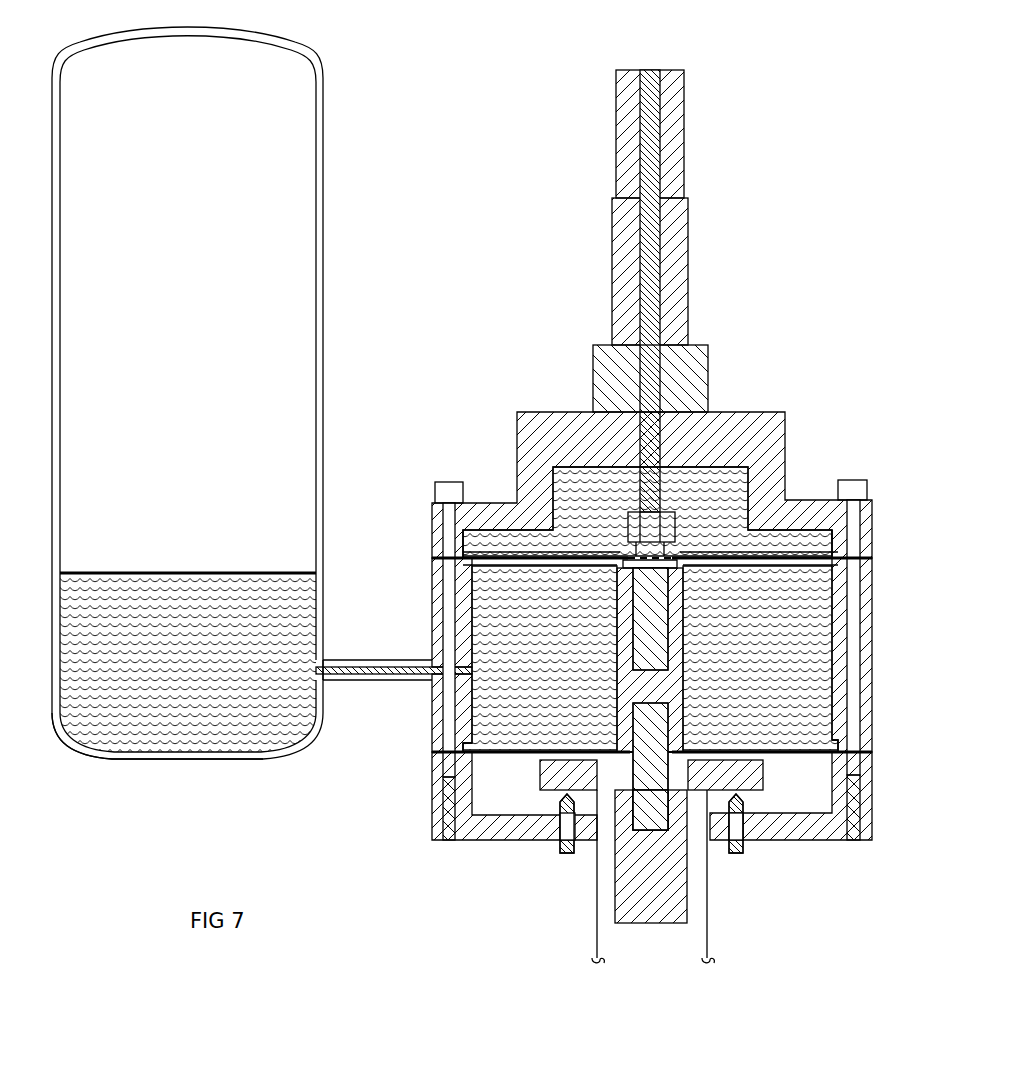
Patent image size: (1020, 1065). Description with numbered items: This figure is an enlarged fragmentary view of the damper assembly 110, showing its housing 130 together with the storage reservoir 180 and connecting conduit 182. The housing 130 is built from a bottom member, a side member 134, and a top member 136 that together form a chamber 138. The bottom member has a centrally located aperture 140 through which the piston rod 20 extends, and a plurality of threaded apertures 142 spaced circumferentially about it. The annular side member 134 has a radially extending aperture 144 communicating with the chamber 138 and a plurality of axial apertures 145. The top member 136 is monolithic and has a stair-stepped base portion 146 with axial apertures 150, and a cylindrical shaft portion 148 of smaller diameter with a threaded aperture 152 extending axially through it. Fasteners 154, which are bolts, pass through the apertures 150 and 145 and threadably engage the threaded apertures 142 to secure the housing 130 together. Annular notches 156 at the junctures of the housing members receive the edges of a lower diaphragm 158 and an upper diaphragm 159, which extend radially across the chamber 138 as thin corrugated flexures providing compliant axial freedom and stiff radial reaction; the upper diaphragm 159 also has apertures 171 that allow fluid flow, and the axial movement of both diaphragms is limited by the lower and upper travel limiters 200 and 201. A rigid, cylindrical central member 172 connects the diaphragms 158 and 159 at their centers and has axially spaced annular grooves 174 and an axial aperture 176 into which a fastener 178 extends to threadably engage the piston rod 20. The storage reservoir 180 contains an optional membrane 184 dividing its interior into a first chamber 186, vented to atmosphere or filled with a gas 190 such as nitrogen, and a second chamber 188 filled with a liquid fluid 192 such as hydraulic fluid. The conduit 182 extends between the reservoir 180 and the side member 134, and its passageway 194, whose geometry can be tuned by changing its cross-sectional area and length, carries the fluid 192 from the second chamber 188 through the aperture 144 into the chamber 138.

The piston rod 20 is at (602, 939).
The damper assembly 110 is at (761, 142).
The housing 130 is at (771, 403).
The side member 134 is at (872, 746).
The top member 136 is at (542, 430).
The chamber 138 is at (490, 580).
The aperture 140 is at (599, 830).
The threaded apertures 142 is at (447, 793).
The aperture 144 is at (414, 681).
The apertures 145 is at (446, 636).
The base portion 146 is at (553, 466).
The shaft portion 148 is at (624, 240).
The apertures 150 is at (446, 521).
The threaded aperture 152 is at (644, 115).
The fasteners 154 is at (446, 493).
The notches 156 is at (487, 549).
The lower diaphragm 158 is at (790, 763).
The upper diaphragm 159 is at (527, 562).
The apertures 171 is at (516, 549).
The central member 172 is at (632, 693).
The annular grooves 174 is at (626, 556).
The aperture 176 is at (640, 651).
The fastener 178 is at (600, 530).
The storage reservoir 180 is at (323, 186).
The conduit 182 is at (343, 683).
The membrane 184 is at (166, 573).
The first chamber 186 is at (316, 246).
The second chamber 188 is at (62, 663).
The gas 190 is at (204, 309).
The liquid fluid 192 is at (181, 681).
The passageway 194 is at (361, 681).
The lower travel limiter 200 is at (563, 847).
The upper travel limiter 201 is at (653, 505).